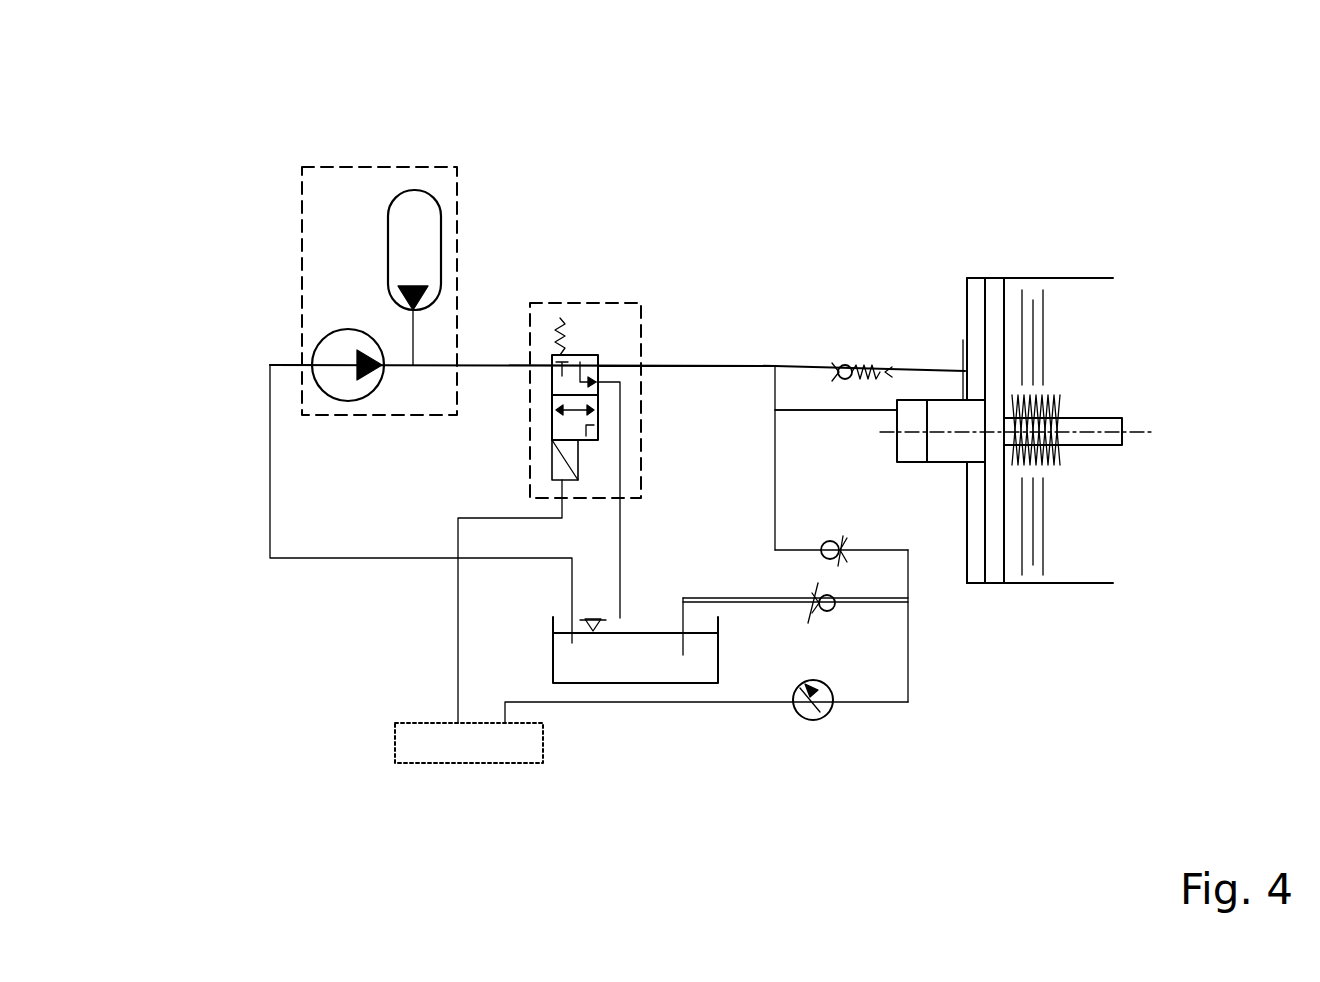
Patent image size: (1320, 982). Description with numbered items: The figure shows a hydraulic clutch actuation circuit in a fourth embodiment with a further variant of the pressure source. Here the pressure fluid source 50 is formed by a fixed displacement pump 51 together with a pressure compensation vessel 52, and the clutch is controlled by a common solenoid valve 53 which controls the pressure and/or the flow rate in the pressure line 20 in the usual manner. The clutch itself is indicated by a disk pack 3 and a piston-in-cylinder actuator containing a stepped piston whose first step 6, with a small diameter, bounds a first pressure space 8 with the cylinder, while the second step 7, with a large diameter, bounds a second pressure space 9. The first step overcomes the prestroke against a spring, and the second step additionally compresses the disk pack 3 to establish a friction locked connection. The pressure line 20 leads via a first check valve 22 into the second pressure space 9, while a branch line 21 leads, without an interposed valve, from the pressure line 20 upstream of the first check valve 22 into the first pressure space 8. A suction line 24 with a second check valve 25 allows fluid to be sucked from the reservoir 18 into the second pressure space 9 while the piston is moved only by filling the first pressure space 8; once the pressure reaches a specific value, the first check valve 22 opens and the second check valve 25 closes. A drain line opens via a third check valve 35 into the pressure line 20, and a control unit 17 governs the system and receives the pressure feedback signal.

The disk pack 3 is at (1071, 331).
The first step 6 is at (953, 450).
The second step 7 is at (997, 585).
The first pressure space 8 is at (913, 418).
The second pressure space 9 is at (977, 312).
The control unit 17 is at (417, 742).
The reservoir 18 is at (647, 665).
The pressure line 20 is at (692, 223).
The branch line 21 is at (898, 652).
The first check valve 22 is at (848, 368).
The suction line 24 is at (795, 748).
The second check valve 25 is at (827, 603).
The third check valve 35 is at (830, 540).
The pressure fluid source 50 is at (302, 167).
The fixed displacement pump 51 is at (332, 365).
The pressure compensation vessel 52 is at (407, 207).
The solenoid valve 53 is at (575, 358).